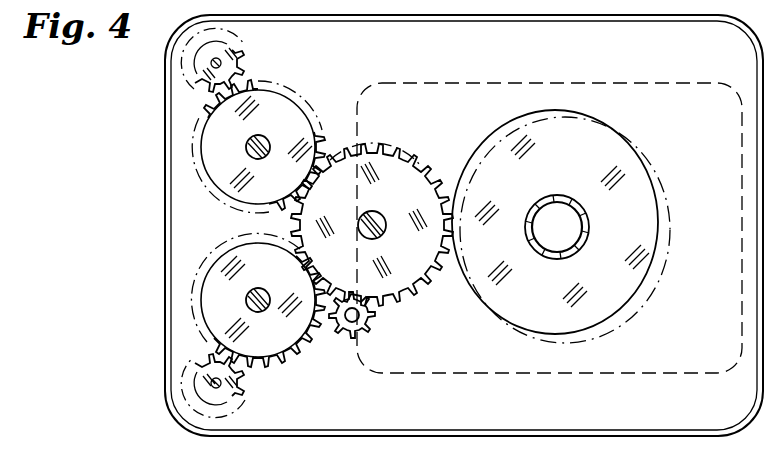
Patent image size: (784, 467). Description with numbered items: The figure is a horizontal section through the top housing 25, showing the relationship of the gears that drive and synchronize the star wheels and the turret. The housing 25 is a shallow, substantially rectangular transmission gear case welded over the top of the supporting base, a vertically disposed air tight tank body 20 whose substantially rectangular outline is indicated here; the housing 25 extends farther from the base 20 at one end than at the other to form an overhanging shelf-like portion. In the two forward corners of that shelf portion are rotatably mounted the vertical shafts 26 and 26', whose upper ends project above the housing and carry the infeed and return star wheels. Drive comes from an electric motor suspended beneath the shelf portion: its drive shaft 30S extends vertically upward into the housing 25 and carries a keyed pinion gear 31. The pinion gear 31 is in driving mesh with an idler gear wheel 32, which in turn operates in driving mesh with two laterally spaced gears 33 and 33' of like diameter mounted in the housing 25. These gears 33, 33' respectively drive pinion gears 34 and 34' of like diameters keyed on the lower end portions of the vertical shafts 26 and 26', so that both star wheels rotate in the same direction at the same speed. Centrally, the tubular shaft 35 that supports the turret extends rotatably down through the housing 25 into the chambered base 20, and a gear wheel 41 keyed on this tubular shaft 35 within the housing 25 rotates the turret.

The tank body 20 is at (645, 83).
The top housing 25 is at (166, 204).
The vertical shaft 26 is at (242, 60).
The vertical shaft 26' is at (234, 386).
The drive shaft 30S is at (372, 326).
The pinion gear 31 is at (378, 308).
The idler gear wheel 32 is at (392, 177).
The gear 33 is at (271, 138).
The gear 33' is at (268, 315).
The pinion gear 34 is at (174, 77).
The pinion gear 34' is at (168, 385).
The tubular shaft 35 is at (590, 226).
The gear wheel 41 is at (500, 315).